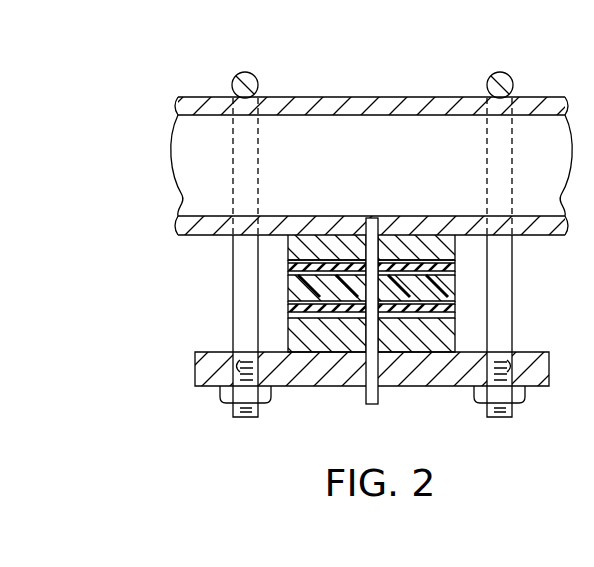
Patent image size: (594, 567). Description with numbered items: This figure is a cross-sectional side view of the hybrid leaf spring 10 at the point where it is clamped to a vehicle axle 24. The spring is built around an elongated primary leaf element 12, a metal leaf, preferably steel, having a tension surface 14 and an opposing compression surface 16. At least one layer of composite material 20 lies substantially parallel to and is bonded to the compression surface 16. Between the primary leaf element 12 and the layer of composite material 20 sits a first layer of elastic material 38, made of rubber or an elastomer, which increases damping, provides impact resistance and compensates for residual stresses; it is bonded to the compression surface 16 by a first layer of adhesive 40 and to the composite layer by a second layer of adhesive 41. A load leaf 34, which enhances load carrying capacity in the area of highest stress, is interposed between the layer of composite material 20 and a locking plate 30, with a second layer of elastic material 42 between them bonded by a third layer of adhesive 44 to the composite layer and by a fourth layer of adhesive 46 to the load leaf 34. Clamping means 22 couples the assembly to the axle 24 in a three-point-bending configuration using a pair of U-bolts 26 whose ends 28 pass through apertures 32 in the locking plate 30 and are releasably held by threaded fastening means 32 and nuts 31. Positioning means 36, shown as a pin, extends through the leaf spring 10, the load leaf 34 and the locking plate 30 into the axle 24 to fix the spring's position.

The hybrid leaf spring 10 is at (124, 204).
The elongated primary leaf element 12 is at (352, 240).
The tension surface 14 is at (314, 231).
The compression surface 16 is at (418, 264).
The layer of composite material 20 is at (294, 291).
The clamping means 22 is at (178, 72).
The axle 24 is at (299, 97).
The U-bolts 26 is at (236, 82).
The ends of the U-bolts 28 is at (243, 416).
The locking plate 30 is at (410, 380).
The nut 31 is at (228, 395).
The apertures 32 is at (240, 366).
The load leaf 34 is at (300, 328).
The positioning means 36 is at (375, 228).
The first layer of elastic material 38 is at (294, 270).
The first layer of adhesive 40 is at (455, 262).
The second layer of adhesive 41 is at (455, 271).
The second layer of elastic material 42 is at (294, 310).
The third layer of adhesive 44 is at (455, 300).
The fourth layer of adhesive 46 is at (455, 313).